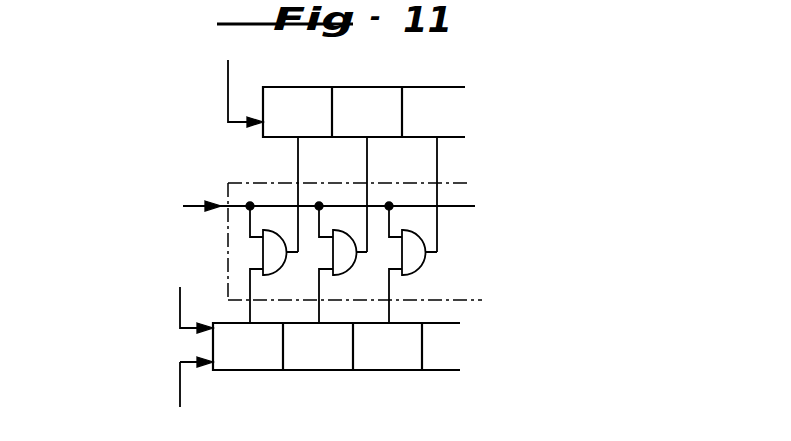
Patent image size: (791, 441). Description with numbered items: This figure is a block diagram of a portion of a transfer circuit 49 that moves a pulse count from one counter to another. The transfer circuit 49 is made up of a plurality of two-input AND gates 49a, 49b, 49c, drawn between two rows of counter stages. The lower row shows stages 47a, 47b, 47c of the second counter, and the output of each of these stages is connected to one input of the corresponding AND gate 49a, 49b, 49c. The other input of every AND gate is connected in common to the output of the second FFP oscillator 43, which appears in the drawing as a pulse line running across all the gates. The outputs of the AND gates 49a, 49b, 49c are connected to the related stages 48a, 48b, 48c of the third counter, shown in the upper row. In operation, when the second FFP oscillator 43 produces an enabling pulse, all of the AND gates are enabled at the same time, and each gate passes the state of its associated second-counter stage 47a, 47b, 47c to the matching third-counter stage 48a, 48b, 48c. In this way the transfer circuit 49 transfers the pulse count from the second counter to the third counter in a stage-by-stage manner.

The second FFP oscillator 43 is at (252, 212).
The stage of the third counter 48a is at (308, 97).
The stage of the third counter 48b is at (380, 97).
The stage of the third counter 48c is at (447, 92).
The transfer circuit 49 is at (232, 242).
The two-input AND gate 49a is at (270, 262).
The two-input AND gate 49b is at (340, 262).
The two-input AND gate 49c is at (409, 262).
The stage of the second counter 47a is at (232, 362).
The stage of the second counter 47b is at (300, 362).
The stage of the second counter 47c is at (370, 362).